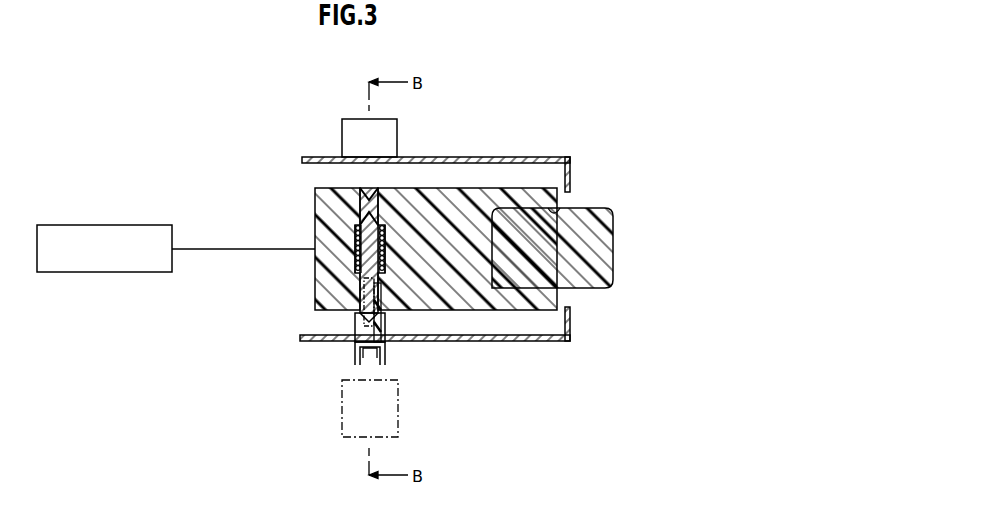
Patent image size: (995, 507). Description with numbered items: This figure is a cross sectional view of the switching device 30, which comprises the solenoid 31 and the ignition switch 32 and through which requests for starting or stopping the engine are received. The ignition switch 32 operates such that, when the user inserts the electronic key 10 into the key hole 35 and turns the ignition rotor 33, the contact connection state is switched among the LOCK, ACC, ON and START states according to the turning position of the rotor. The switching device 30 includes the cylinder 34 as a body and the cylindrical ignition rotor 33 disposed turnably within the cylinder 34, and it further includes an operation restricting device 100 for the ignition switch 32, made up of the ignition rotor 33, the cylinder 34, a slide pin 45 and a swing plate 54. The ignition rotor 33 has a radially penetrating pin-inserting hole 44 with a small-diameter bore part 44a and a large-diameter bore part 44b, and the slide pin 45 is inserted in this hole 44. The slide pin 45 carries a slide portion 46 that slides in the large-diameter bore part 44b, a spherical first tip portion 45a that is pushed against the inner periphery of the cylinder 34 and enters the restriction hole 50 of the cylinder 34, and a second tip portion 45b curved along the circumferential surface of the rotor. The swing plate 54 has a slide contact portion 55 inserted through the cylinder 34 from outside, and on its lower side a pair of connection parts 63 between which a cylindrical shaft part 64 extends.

The electronic key 10 is at (610, 244).
The switching device 30 is at (577, 393).
The solenoid 31 is at (398, 418).
The ignition switch 32 is at (106, 226).
The ignition rotor 33 is at (527, 190).
The cylinder 34 is at (478, 157).
The key hole 35 is at (555, 218).
The pin-inserting hole 44 is at (256, 190).
The small-diameter bore part 44a is at (357, 236).
The large-diameter bore part 44b is at (381, 247).
The slide pin 45 is at (369, 290).
The first tip portion 45a is at (366, 338).
The second tip portion 45b is at (368, 190).
The slide portion 46 is at (372, 304).
The restriction hole 50 is at (383, 326).
The swing plate 54 is at (376, 320).
The slide contact portion 55 is at (384, 314).
The connection parts 63 is at (357, 350).
The shaft part 64 is at (368, 357).
The operation restricting device 100 is at (397, 321).